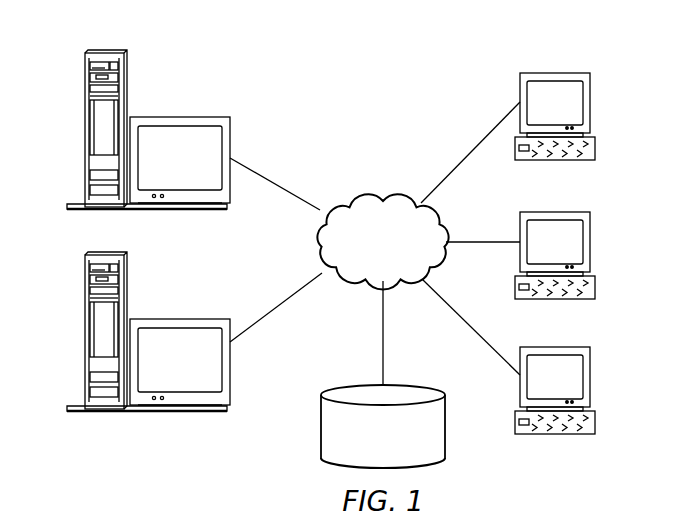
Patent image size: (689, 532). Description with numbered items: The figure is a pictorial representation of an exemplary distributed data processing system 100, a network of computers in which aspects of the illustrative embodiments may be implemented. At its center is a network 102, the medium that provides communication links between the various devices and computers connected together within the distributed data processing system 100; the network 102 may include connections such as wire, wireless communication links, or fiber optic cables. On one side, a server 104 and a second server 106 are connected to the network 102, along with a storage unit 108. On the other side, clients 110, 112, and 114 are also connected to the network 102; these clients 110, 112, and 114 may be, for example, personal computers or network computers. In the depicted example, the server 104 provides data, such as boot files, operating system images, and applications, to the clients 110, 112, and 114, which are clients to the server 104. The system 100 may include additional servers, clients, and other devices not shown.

The distributed data processing system 100 is at (438, 58).
The network 102 is at (356, 196).
The server 104 is at (84, 134).
The server 106 is at (84, 334).
The storage unit 108 is at (321, 425).
The client 110 is at (590, 103).
The client 112 is at (590, 242).
The client 114 is at (590, 377).